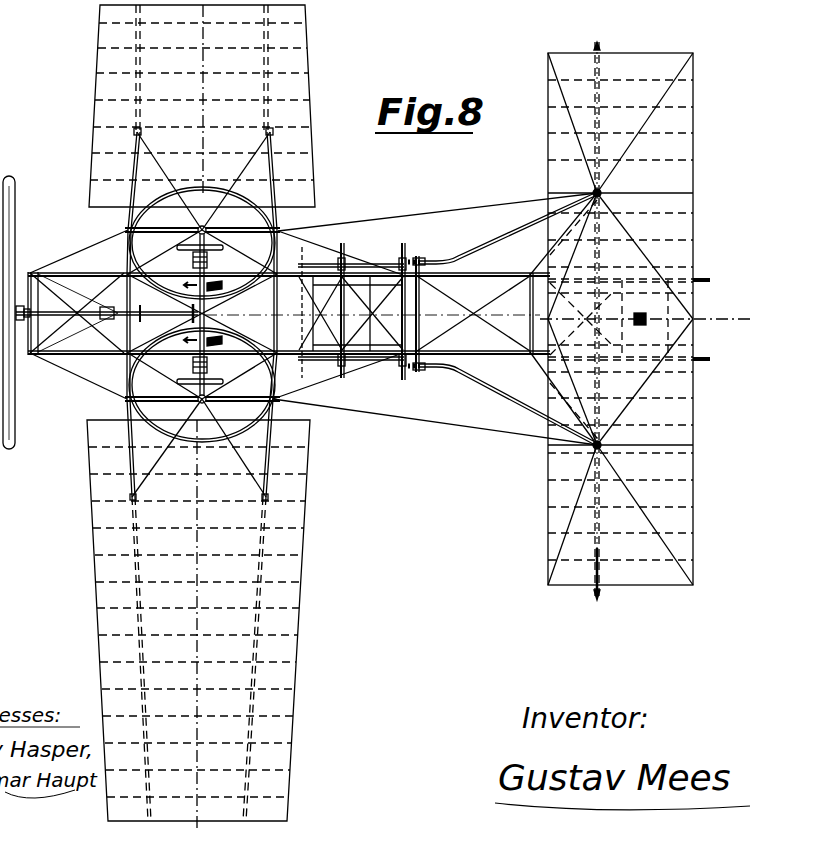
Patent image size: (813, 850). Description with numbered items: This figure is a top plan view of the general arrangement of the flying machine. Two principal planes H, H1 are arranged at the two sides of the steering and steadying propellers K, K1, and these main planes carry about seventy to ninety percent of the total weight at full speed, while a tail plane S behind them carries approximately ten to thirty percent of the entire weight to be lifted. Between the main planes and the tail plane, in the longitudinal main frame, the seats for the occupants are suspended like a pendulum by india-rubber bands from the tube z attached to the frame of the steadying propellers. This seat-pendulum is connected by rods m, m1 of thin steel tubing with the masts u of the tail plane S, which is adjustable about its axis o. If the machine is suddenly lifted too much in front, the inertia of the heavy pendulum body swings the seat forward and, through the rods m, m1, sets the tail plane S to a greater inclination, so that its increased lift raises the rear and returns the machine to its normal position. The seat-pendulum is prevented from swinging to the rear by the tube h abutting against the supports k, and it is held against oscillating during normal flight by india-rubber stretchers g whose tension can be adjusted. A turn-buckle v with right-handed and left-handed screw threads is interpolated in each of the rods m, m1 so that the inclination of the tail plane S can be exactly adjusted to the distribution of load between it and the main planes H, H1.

The principal plane H1 is at (303, 167).
The principal plane H is at (290, 590).
The upper lifting screw (rotor) K1 is at (130, 219).
The lower lifting screw (rotor) K is at (127, 378).
The tail plane S is at (547, 515).
The rod m1 is at (508, 235).
The rod m is at (484, 392).
The turn-buckle v is at (419, 332).
The tube z is at (342, 378).
The tube h is at (403, 380).
The mast u is at (593, 449).
The axis o is at (596, 546).
The india-rubber stretcher g is at (361, 17).
The support k is at (437, 20).